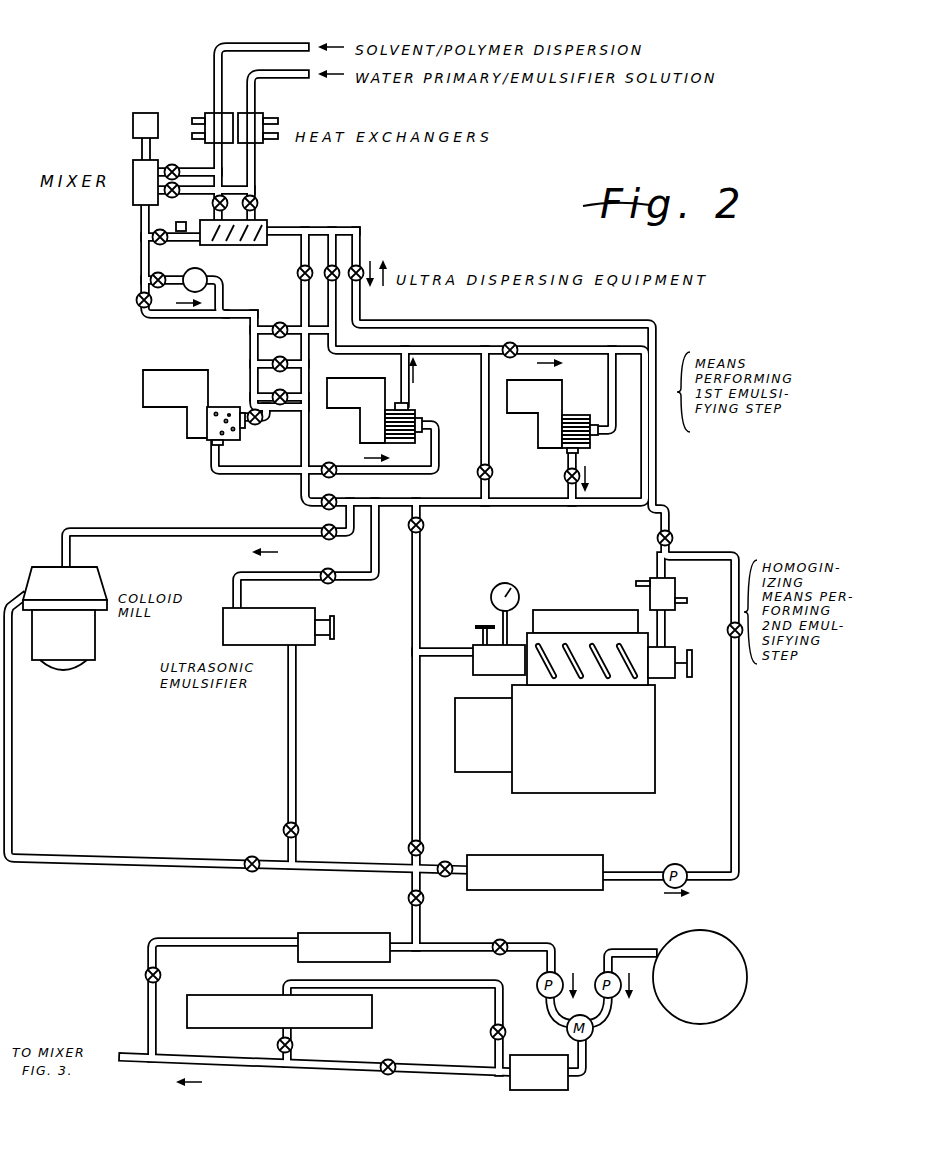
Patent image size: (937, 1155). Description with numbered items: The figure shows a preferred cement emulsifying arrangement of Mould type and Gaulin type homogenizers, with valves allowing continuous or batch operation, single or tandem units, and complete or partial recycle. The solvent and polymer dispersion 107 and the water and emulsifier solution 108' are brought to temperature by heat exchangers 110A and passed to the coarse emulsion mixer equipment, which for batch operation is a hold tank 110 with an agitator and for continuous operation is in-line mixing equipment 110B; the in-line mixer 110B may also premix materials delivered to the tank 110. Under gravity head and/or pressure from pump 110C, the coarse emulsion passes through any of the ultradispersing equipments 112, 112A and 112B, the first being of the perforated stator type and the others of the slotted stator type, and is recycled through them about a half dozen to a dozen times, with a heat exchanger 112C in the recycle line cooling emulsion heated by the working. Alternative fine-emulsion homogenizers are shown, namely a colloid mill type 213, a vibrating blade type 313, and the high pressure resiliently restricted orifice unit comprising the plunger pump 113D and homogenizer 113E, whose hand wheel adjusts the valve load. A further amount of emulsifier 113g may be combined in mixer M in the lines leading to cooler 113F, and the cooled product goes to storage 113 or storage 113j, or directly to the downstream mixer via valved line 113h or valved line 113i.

The solvent and polymer dispersion 107 is at (282, 30).
The water and emulsifier solution 108' is at (284, 147).
The hold tank 110 is at (268, 220).
The heat exchangers 110A is at (262, 143).
The in-line mixing equipment 110B is at (133, 202).
The pump 110C is at (207, 278).
The ultradispersing equipment 112 is at (185, 434).
The ultradispersing equipment 112A is at (360, 432).
The ultradispersing equipment 112B is at (537, 445).
The heat exchanger in the recycle line 112C is at (300, 227).
The colloid mill type homogenizer 213 is at (83, 633).
The vibrating blade type homogenizer 313 is at (315, 645).
The plunger pump 113D is at (655, 783).
The homogenizer 113E is at (660, 680).
The storage tank 113 is at (566, 845).
The valved line 113i is at (247, 923).
The storage 113j is at (372, 1020).
The valved line 113h is at (318, 1063).
The cooler 113F is at (510, 1083).
The further amount of emulsifier 113g is at (747, 968).